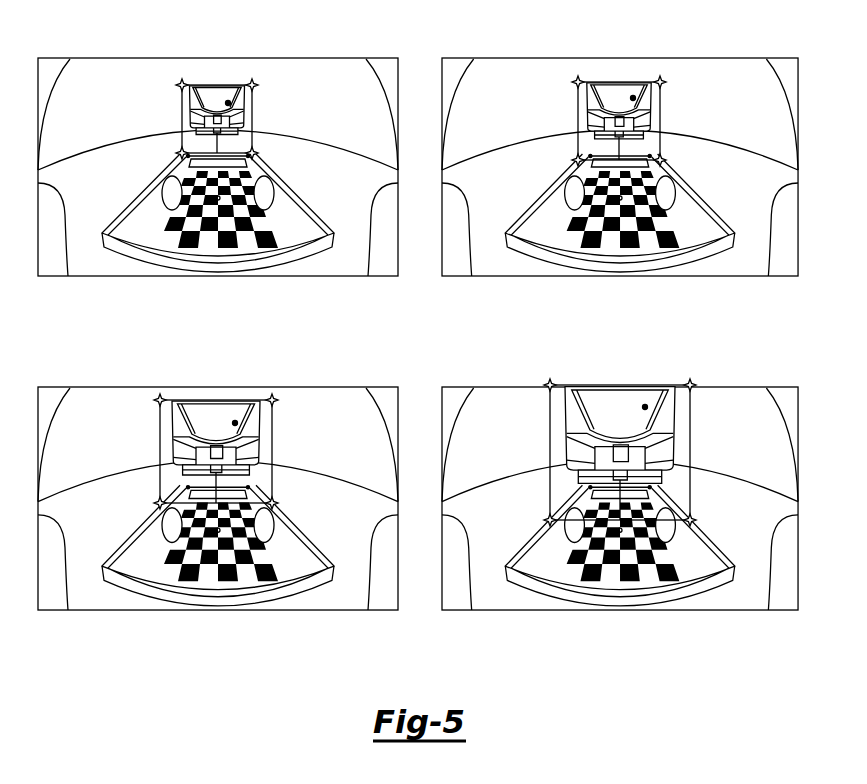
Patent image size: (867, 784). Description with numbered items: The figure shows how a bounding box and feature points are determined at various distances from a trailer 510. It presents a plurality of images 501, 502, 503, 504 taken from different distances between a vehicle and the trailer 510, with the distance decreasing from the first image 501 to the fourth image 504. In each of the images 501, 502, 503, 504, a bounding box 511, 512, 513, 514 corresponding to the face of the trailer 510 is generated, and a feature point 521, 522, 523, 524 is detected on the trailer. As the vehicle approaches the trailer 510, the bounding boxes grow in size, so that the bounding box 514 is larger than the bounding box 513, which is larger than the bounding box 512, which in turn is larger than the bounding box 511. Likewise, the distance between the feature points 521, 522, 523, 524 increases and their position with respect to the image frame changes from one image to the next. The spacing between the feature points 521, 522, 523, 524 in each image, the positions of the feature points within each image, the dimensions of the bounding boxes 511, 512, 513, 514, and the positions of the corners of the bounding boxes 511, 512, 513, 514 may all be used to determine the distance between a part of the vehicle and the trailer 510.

The image 501 is at (128, 58).
The image 502 is at (532, 58).
The image 503 is at (128, 387).
The image 504 is at (518, 387).
The trailer 510 is at (218, 89).
The bounding box 511 is at (182, 117).
The bounding box 512 is at (578, 117).
The bounding box 513 is at (160, 452).
The bounding box 514 is at (550, 452).
The feature point 521 is at (228, 103).
The feature point 522 is at (633, 98).
The feature point 523 is at (235, 423).
The feature point 524 is at (645, 407).